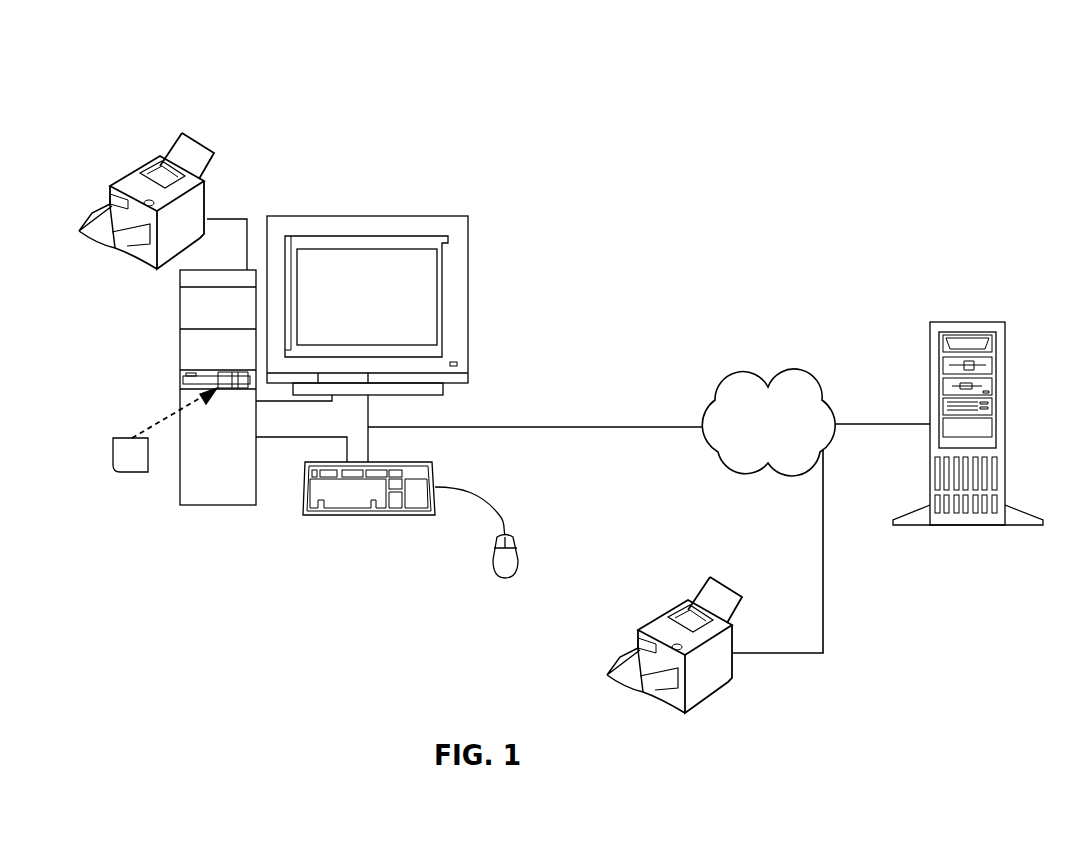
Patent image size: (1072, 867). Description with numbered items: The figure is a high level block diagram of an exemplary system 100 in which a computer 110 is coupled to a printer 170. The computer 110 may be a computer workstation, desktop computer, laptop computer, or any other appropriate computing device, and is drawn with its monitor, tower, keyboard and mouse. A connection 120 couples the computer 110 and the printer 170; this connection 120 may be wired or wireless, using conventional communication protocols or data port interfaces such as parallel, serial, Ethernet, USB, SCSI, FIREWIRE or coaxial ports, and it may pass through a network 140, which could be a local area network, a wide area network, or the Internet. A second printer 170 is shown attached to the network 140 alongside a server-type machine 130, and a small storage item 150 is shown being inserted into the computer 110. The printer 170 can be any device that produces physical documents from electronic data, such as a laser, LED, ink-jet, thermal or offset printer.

The system 100 is at (228, 57).
The computer 110 is at (368, 216).
The connection 120 is at (535, 414).
The server 130 is at (967, 322).
The network 140 is at (787, 435).
The storage medium 150 is at (165, 445).
The printer 170 is at (77, 230).